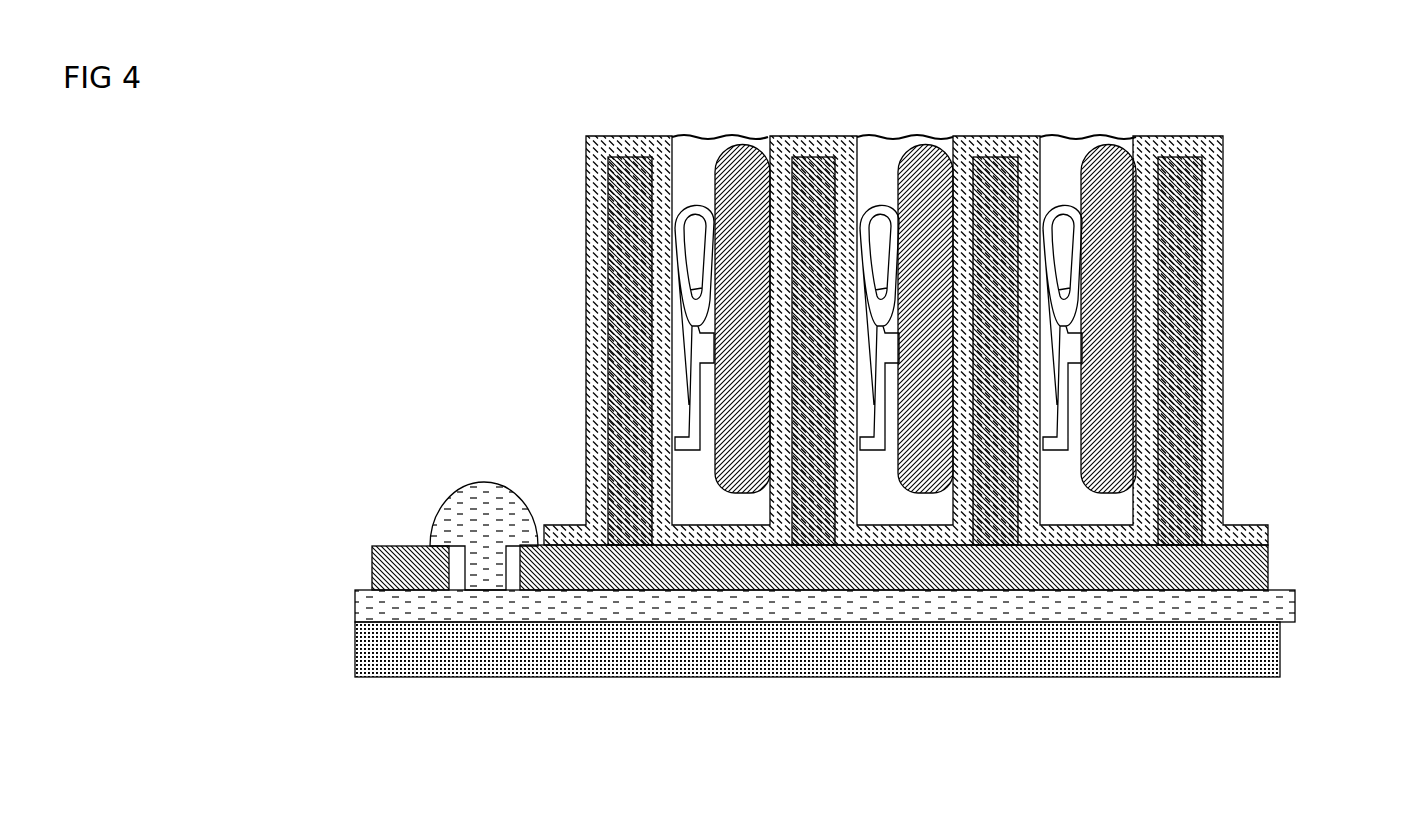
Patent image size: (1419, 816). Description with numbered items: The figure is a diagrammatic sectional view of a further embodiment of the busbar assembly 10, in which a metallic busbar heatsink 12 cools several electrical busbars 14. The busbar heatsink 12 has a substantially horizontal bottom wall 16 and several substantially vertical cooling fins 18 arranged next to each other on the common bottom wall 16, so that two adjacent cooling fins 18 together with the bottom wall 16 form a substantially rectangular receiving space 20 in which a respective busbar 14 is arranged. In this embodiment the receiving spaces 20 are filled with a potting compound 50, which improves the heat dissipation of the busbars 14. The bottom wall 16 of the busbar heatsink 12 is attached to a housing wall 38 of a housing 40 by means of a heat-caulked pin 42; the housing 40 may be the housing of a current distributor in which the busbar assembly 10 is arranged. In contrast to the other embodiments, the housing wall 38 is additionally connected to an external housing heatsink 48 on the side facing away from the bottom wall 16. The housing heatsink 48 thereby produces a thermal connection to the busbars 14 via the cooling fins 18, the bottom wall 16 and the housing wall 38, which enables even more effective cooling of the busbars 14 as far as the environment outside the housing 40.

The busbar assembly 10 is at (1323, 315).
The busbar heatsink 12 is at (380, 515).
The busbar 14 is at (748, 195).
The bottom wall 16 is at (1225, 580).
The cooling fins 18 is at (633, 200).
The receiving space 20 is at (700, 505).
The housing wall 38 is at (1275, 607).
The housing 40 is at (1343, 572).
The heat-caulked pin 42 is at (475, 520).
The housing heatsink 48 is at (1255, 657).
The potting compound 50 is at (685, 176).